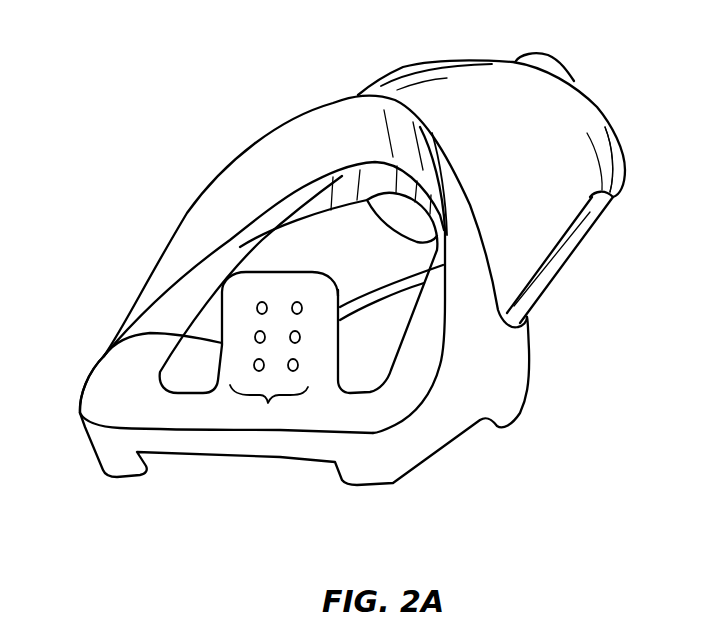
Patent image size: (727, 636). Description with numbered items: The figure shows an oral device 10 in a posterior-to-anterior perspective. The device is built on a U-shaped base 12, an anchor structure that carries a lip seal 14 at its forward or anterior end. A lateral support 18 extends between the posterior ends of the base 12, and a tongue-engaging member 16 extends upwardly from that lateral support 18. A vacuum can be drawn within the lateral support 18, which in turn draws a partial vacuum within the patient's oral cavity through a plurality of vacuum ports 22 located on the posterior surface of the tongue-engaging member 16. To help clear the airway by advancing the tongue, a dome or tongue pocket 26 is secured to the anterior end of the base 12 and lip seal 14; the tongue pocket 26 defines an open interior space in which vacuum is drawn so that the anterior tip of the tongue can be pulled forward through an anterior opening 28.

The oral device 10 is at (170, 75).
The U-shaped base 12 is at (237, 247).
The lip seal 14 is at (342, 128).
The tongue-engaging member 16 is at (110, 341).
The lateral support 18 is at (308, 445).
The vacuum ports 22 is at (268, 403).
The tongue pocket 26 is at (613, 198).
The anterior opening 28 is at (345, 235).